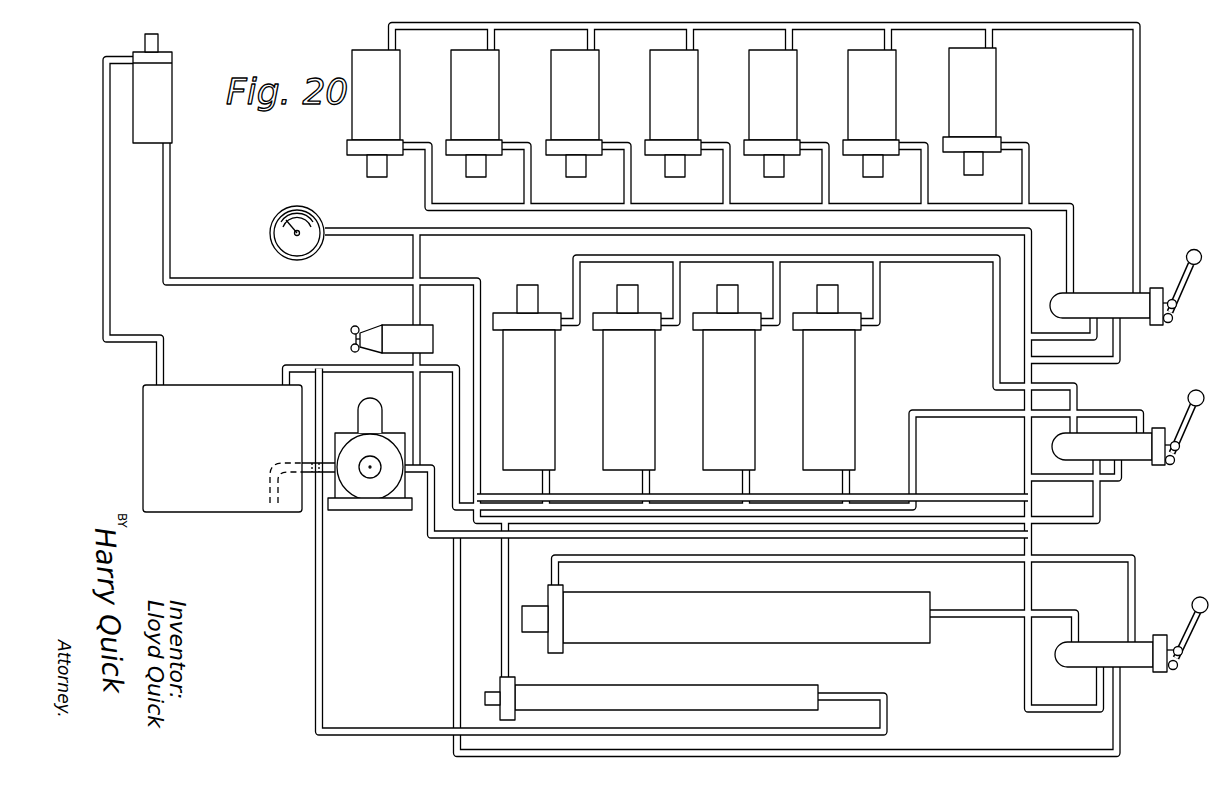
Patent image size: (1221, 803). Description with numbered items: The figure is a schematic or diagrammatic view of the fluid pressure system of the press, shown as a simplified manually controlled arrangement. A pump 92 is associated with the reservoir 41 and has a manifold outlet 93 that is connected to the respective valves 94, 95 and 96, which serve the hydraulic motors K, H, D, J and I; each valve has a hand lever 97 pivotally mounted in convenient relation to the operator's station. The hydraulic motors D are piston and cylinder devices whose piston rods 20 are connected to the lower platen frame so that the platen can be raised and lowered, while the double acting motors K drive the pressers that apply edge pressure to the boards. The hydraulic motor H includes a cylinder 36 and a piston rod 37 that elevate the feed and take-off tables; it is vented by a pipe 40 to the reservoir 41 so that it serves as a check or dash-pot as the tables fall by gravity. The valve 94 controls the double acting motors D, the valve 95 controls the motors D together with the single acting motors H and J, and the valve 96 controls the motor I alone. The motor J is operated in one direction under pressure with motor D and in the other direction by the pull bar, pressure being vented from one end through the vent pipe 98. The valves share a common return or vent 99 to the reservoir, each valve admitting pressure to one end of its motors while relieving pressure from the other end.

The piston rod 20 is at (545, 272).
The cylinder 36 is at (170, 118).
The piston rod 37 is at (160, 42).
The pipe 40 is at (105, 262).
The reservoir 41 is at (152, 441).
The pump 92 is at (372, 497).
The manifold outlet 93 is at (424, 512).
The valve 94 is at (1140, 320).
The valve 95 is at (1128, 443).
The valve 96 is at (1123, 646).
The hand lever 97 is at (1172, 464).
The vent pipe 98 is at (316, 660).
The common return or vent 99 is at (990, 494).
The hydraulic motor H is at (176, 89).
The double acting hydraulic motor K is at (462, 104).
The hydraulic motor D is at (678, 372).
The motor I is at (803, 599).
The motor J is at (731, 689).